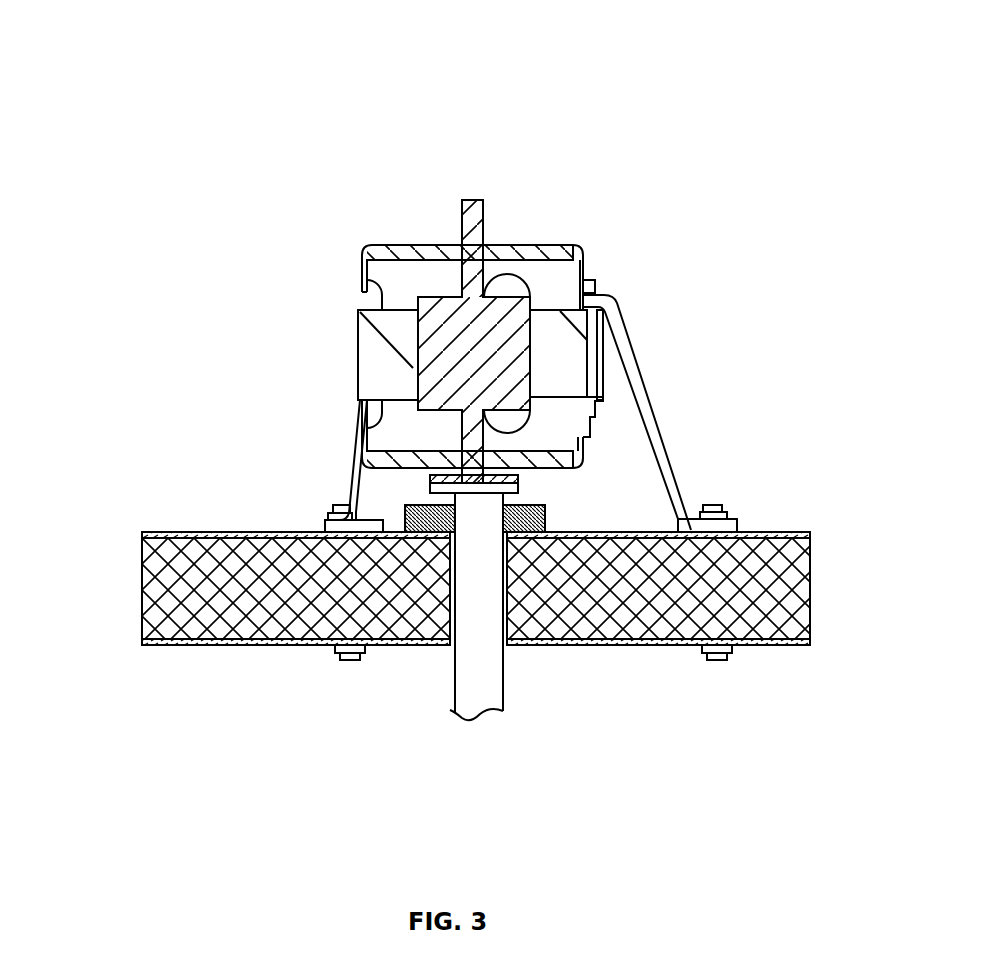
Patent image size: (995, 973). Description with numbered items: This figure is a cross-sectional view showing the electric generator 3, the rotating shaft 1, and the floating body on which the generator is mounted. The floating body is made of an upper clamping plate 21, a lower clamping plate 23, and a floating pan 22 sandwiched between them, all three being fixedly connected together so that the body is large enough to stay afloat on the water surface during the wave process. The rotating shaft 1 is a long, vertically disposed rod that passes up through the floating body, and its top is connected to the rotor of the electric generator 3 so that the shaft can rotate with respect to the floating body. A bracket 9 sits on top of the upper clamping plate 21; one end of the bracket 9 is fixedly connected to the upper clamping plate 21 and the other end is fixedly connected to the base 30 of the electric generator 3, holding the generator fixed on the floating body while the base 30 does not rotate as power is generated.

The rotating shaft 1 is at (488, 683).
The electric generator 3 is at (552, 233).
The bracket 9 is at (652, 410).
The upper clamping plate 21 is at (312, 535).
The floating pan 22 is at (222, 582).
The lower clamping plate 23 is at (217, 643).
The base 30 is at (372, 249).